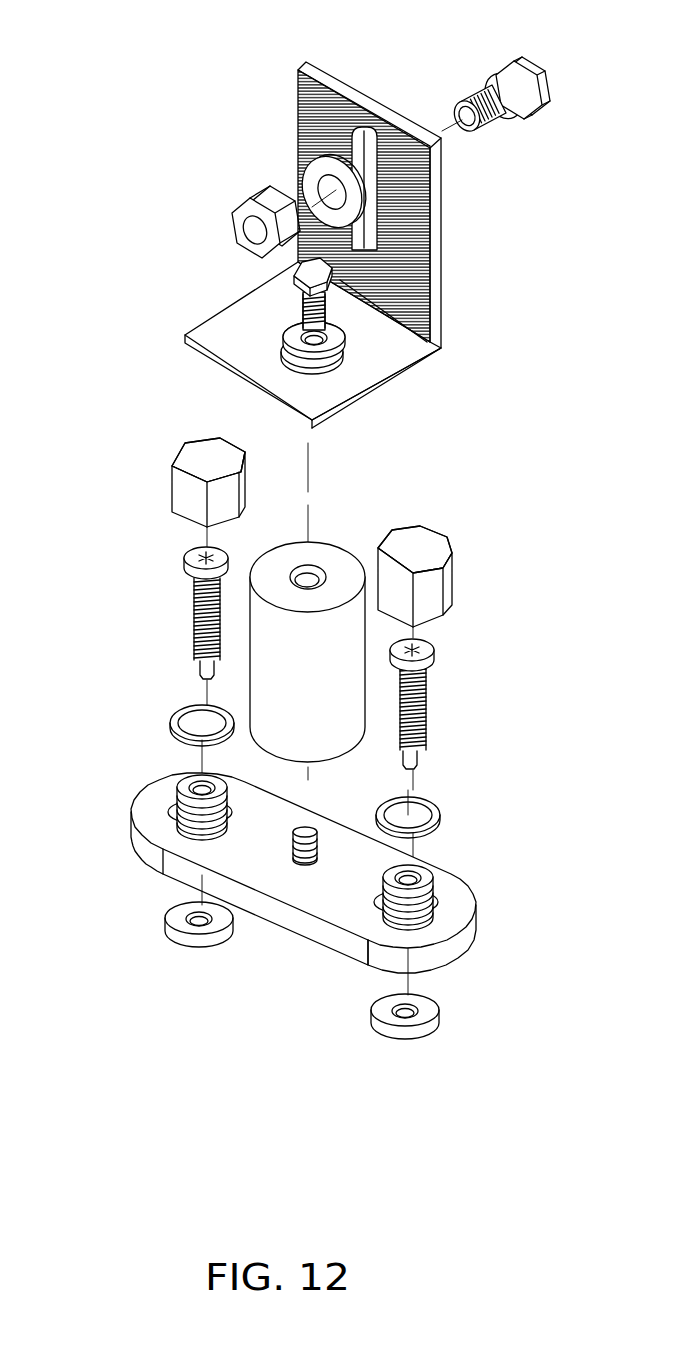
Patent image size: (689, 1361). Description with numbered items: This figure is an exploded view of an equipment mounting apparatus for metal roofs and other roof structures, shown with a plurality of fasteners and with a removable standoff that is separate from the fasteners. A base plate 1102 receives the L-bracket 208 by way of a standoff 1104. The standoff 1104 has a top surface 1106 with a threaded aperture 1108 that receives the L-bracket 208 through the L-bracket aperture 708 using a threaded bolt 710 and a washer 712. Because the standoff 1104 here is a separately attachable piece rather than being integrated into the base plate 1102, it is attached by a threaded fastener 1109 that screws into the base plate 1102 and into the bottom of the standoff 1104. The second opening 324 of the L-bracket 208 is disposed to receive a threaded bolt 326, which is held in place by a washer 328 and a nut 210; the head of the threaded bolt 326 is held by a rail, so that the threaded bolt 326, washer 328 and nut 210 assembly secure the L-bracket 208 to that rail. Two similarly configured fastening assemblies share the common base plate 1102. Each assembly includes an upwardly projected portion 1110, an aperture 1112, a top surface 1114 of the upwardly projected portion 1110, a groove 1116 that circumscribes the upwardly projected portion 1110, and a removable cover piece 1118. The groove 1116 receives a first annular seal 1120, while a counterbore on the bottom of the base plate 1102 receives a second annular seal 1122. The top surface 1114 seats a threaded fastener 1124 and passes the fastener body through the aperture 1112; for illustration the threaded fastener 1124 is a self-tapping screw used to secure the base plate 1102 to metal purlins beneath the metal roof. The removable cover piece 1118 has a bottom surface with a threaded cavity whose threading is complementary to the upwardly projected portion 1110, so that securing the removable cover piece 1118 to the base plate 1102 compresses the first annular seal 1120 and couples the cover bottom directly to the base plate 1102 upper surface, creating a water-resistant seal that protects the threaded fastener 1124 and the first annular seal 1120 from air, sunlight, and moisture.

The L-bracket 208 is at (442, 296).
The nut 210 is at (238, 230).
The second opening 324 is at (376, 210).
The threaded bolt 326 is at (505, 62).
The washer 328 is at (318, 158).
The L-bracket aperture 708 is at (304, 361).
The threaded bolt 710 is at (297, 282).
The washer 712 is at (292, 336).
The base plate 1102 is at (450, 898).
The standoff 1104 is at (362, 633).
The top surface 1106 is at (342, 568).
The threaded aperture 1108 is at (318, 563).
The threaded fastener 1109 is at (294, 862).
The upwardly projected portion 1110 is at (172, 815).
The aperture 1112 is at (198, 786).
The top surface 1114 is at (178, 787).
The groove 1116 is at (229, 806).
The removable cover piece 1118 is at (170, 480).
The first annular seal 1120 is at (172, 718).
The second annular seal 1122 is at (168, 920).
The threaded fastener 1124 is at (190, 598).